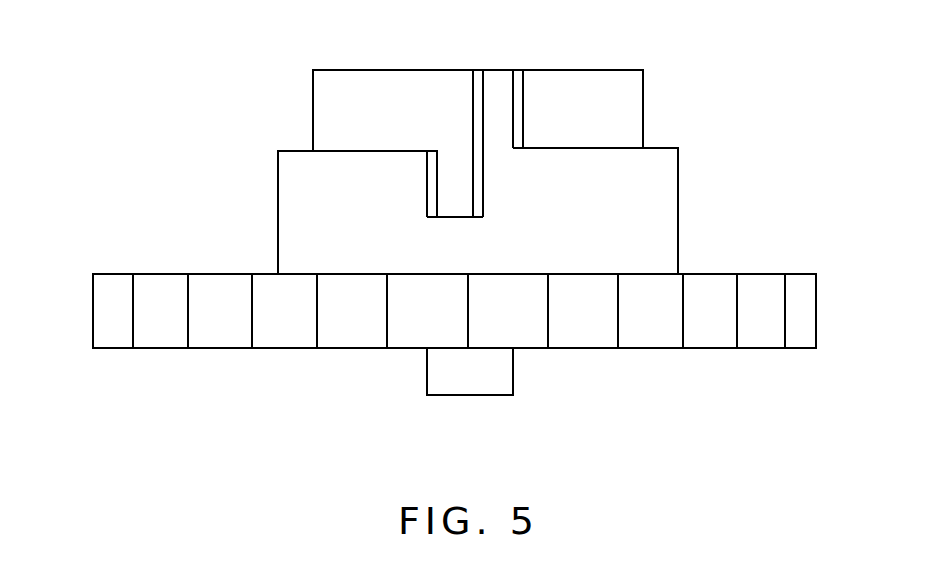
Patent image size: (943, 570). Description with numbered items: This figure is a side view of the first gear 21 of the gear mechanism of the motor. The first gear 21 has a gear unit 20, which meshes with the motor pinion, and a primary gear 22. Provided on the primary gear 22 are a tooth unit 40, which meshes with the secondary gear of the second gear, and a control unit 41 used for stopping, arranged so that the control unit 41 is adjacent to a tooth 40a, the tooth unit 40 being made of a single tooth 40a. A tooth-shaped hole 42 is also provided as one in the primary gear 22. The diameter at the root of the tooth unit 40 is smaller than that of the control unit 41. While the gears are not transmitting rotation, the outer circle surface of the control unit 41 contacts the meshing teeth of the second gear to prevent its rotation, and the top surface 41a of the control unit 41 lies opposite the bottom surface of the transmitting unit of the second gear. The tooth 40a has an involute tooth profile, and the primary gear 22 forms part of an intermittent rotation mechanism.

The gear unit 20 is at (227, 333).
The first gear 21 is at (667, 92).
The primary gear 22 is at (272, 190).
The tooth unit 40 is at (429, 52).
The tooth 40a is at (505, 117).
The control unit 41 is at (657, 217).
The top surface 41a is at (663, 143).
The tooth-shaped hole 42 is at (457, 208).